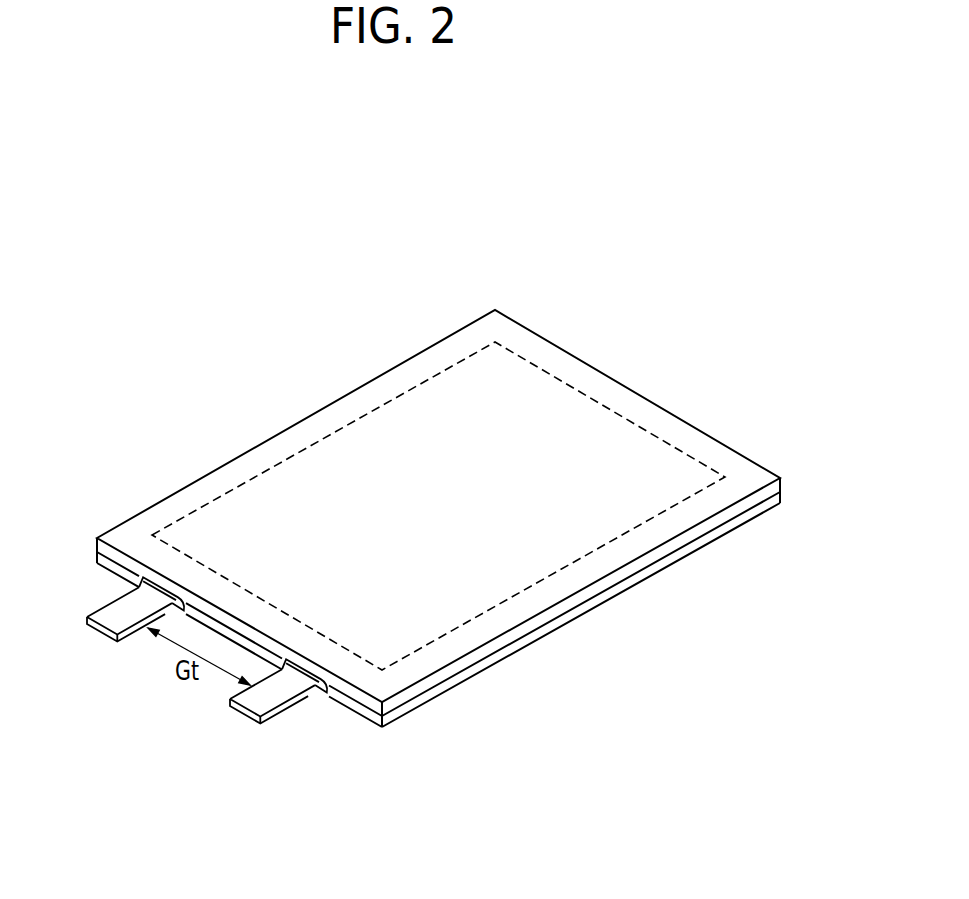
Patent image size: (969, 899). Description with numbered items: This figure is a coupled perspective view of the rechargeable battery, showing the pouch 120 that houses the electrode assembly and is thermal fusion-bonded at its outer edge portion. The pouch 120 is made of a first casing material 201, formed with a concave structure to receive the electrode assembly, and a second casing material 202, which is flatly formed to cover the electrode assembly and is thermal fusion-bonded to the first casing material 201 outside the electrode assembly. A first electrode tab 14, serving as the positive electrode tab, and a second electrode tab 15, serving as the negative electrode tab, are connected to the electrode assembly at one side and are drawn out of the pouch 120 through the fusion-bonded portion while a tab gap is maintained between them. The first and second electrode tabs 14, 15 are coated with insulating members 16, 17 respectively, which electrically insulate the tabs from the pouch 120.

The first electrode tab 14 is at (107, 613).
The second electrode tab 15 is at (254, 706).
The insulating member 16 is at (162, 590).
The insulating member 17 is at (308, 672).
The pouch 120 is at (438, 527).
The first casing material 201 is at (652, 679).
The second casing material 202 is at (565, 606).